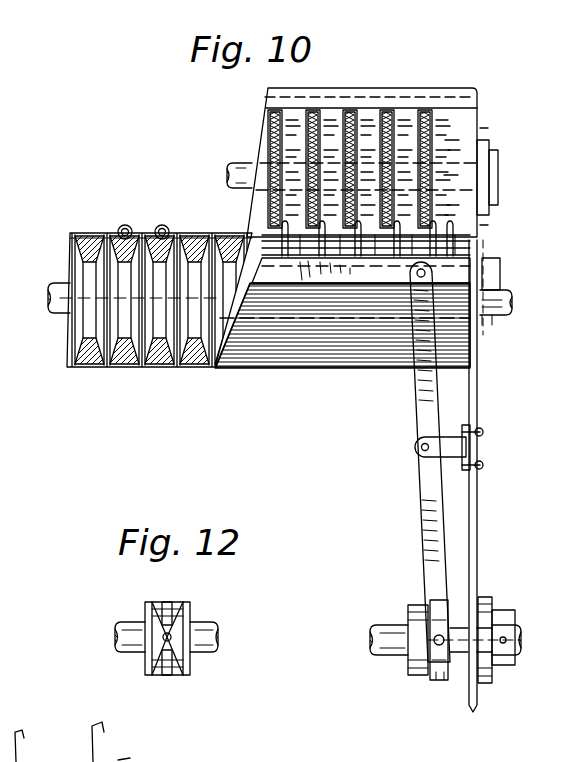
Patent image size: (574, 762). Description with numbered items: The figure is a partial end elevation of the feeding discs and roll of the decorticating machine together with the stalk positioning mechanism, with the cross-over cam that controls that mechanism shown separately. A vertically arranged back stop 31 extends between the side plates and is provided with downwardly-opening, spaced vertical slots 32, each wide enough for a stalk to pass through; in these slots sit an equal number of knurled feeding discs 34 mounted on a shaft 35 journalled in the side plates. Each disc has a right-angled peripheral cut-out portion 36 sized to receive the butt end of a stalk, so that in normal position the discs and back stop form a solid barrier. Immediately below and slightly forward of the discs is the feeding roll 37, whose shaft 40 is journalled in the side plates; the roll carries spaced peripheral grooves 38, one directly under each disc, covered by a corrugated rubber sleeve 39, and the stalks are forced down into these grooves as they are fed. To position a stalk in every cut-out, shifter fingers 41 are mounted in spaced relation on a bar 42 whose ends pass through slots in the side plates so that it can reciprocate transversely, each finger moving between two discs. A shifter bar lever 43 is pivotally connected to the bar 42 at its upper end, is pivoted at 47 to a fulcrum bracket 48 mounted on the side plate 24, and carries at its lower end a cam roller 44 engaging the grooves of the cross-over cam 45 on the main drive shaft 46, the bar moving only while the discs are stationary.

In FIG. 10, the side plate 24 is at (478, 522).
In FIG. 10, the back stop 31 is at (458, 126).
In FIG. 10, the vertical slots 32 is at (438, 128).
In FIG. 10, the feeding discs 34 is at (430, 122).
In FIG. 10, the shaft 35 is at (243, 163).
In FIG. 10, the cut-out portions 36 is at (268, 233).
In FIG. 10, the feeding roll 37 is at (325, 350).
In FIG. 10, the peripheral grooves 38 is at (124, 365).
In FIG. 10, the rubber sleeve 39 is at (261, 368).
In FIG. 10, the shaft 40 is at (60, 305).
In FIG. 10, the shifter fingers 41 is at (440, 238).
In FIG. 10, the bar 42 is at (483, 280).
In FIG. 10, the shifter bar lever 43 is at (418, 404).
In FIG. 10, the cam roller 44 is at (431, 664).
In FIG. 10, the cross-over cam 45 is at (447, 672).
In FIG. 12, the cross-over cam 45 is at (181, 616).
In FIG. 10, the main drive shaft 46 is at (392, 640).
In FIG. 12, the main drive shaft 46 is at (200, 652).
In FIG. 10, the pivot 47 is at (421, 449).
In FIG. 10, the fulcrum bracket 48 is at (452, 449).